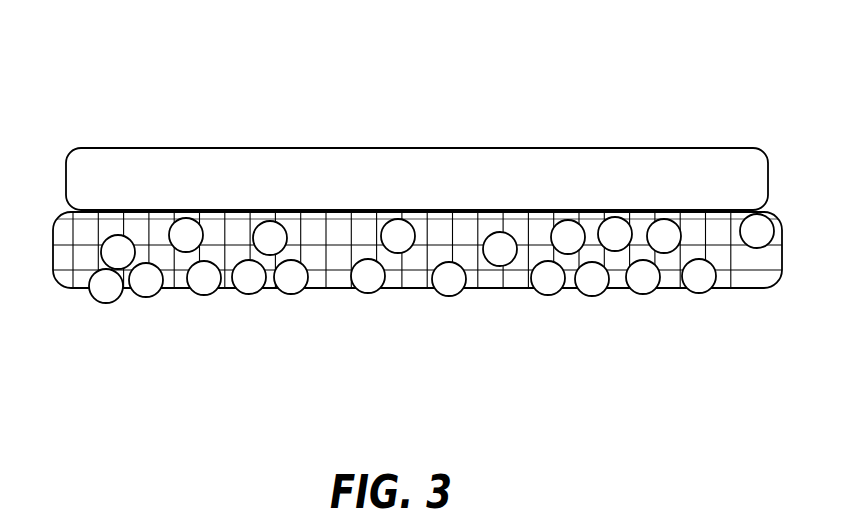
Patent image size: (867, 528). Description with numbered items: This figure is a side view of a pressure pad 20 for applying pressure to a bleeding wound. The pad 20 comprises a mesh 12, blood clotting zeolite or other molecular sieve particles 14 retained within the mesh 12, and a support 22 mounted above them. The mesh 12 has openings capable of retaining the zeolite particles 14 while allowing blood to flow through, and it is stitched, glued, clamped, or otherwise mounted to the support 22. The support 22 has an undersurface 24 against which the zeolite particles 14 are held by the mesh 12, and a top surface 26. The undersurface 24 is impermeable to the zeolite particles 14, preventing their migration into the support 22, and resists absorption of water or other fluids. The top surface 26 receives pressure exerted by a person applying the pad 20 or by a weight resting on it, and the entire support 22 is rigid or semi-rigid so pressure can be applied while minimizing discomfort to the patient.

The mesh 12 is at (55, 290).
The zeolite particles 14 is at (297, 291).
The pad 20 is at (762, 110).
The support 22 is at (78, 187).
The undersurface 24 is at (483, 229).
The top surface 26 is at (200, 148).